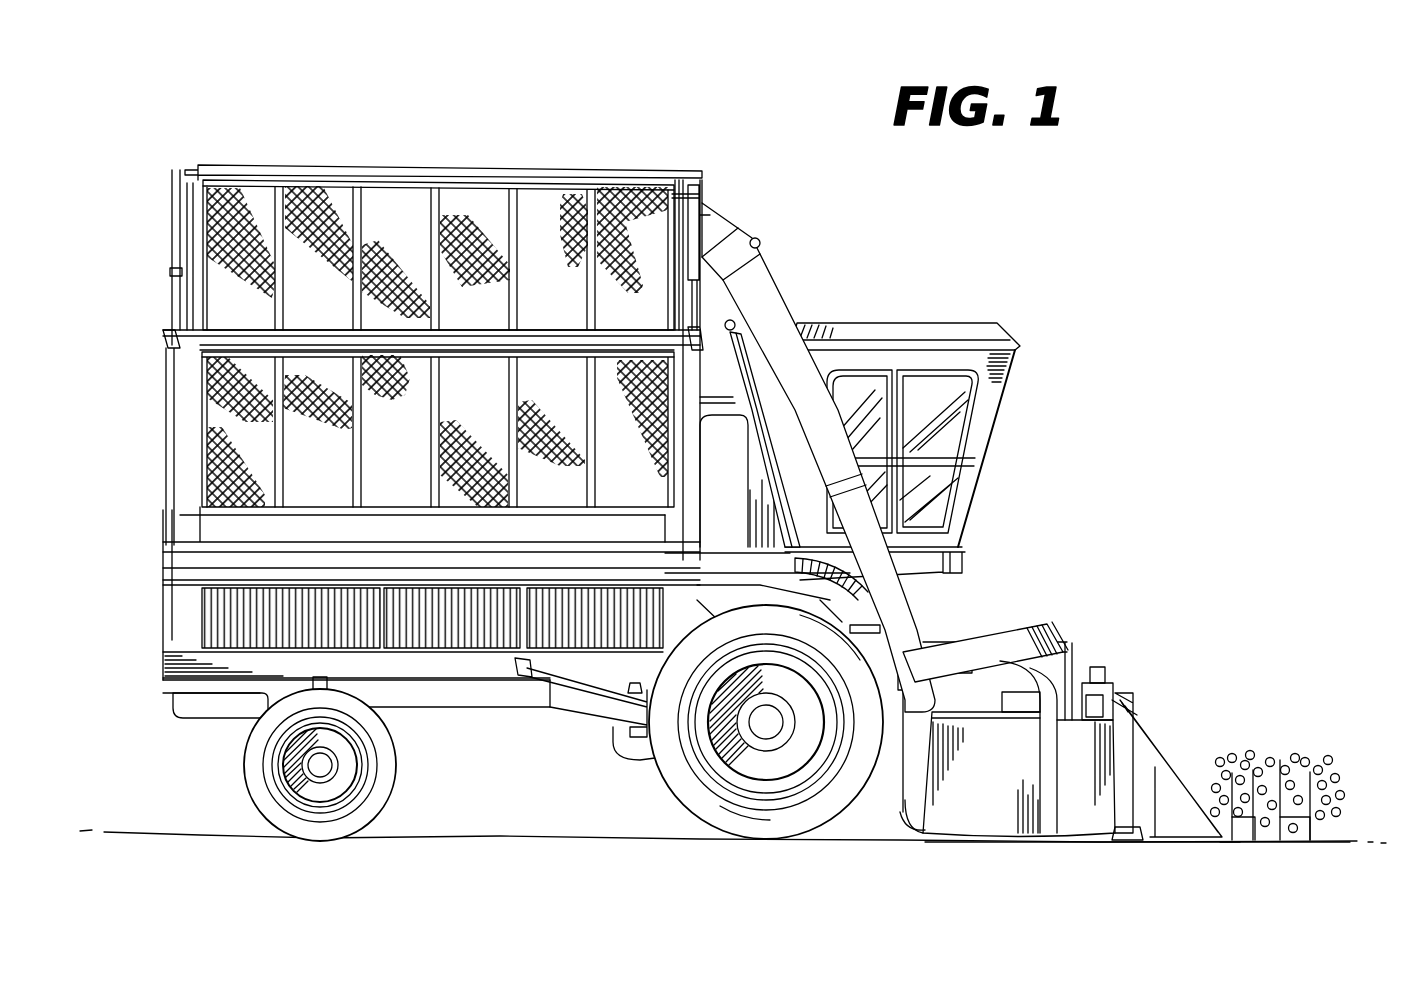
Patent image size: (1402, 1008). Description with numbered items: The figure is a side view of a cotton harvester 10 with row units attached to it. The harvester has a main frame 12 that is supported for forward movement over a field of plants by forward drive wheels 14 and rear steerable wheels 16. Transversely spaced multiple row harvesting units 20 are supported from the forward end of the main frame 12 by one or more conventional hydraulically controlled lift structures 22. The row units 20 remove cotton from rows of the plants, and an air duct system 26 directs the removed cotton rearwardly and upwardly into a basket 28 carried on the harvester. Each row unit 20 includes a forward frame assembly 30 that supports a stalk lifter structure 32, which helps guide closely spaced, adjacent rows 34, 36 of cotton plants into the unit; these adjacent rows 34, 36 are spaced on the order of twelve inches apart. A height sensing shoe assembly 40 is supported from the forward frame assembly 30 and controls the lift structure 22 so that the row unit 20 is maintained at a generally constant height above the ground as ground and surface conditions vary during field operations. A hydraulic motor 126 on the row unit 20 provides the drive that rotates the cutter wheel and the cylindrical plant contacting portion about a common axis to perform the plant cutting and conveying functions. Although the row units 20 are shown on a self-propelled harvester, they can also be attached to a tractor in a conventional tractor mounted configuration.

The cotton harvester 10 is at (1115, 257).
The main frame 12 is at (467, 703).
The forward drive wheels 14 is at (668, 795).
The rear steerable wheels 16 is at (393, 793).
The row harvesting unit 20 is at (1163, 691).
The hydraulically controlled lift structure 22 is at (887, 648).
The air duct system 26 is at (817, 279).
The basket 28 is at (593, 171).
The forward frame assembly 30 is at (1115, 843).
The stalk lifter structure 32 is at (1174, 758).
The row of cotton plants 34 is at (1310, 772).
The row of cotton plants 36 is at (1250, 845).
The height sensing shoe assembly 40 is at (1139, 853).
The hydraulic motor 126 is at (1097, 667).